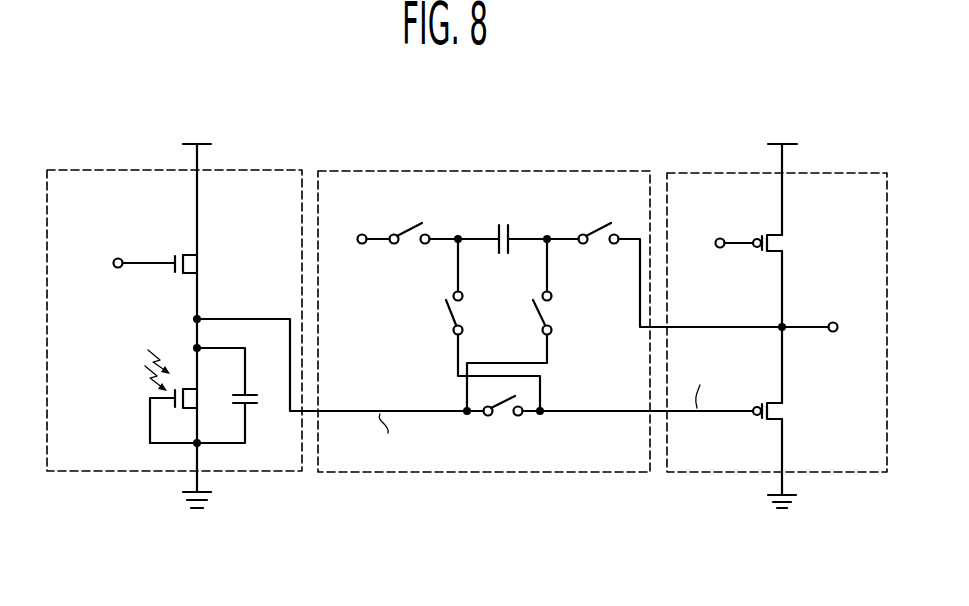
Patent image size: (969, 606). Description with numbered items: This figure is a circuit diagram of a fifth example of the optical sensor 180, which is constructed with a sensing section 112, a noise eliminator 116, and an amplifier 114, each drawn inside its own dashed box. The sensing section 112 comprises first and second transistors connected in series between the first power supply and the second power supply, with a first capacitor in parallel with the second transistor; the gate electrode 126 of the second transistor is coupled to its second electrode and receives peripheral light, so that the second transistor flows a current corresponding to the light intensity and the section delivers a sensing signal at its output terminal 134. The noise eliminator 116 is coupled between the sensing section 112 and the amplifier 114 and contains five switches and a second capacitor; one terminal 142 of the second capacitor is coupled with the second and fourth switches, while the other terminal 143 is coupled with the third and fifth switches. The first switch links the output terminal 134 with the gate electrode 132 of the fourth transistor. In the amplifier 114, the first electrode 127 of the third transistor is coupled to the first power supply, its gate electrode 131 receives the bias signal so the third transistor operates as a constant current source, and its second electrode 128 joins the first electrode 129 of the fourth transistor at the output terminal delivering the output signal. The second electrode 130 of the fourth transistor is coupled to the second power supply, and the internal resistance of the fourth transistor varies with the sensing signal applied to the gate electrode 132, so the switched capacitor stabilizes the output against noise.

The optical sensor 180 is at (692, 106).
The sensing section 112 is at (117, 472).
The noise eliminator 116 is at (463, 473).
The amplifier 114 is at (708, 473).
The output terminal of sensing section 134 is at (254, 317).
The gate electrode of second transistor 126 is at (150, 418).
The terminal of second capacitor 142 is at (458, 234).
The terminal of second capacitor 143 is at (547, 234).
The first electrode of third transistor 127 is at (783, 210).
The second electrode of third transistor 128 is at (783, 285).
The first electrode of fourth transistor 129 is at (783, 370).
The second electrode of fourth transistor 130 is at (783, 452).
The gate electrode of third transistor 131 is at (737, 247).
The gate electrode of fourth transistor 132 is at (730, 414).